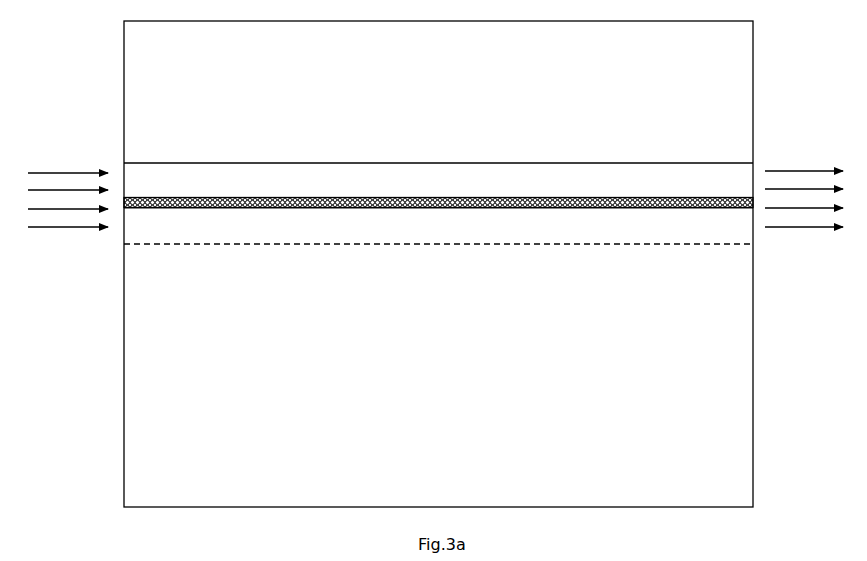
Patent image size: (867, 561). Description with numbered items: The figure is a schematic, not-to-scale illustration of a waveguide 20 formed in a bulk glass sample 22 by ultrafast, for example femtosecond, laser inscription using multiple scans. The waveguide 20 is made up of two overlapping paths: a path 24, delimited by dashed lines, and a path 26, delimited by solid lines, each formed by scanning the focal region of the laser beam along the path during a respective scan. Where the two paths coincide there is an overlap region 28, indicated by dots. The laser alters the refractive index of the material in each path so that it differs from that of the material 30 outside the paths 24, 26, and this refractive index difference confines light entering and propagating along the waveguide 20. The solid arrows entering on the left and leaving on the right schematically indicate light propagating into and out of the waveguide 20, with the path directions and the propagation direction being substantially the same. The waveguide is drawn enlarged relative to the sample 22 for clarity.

The waveguide 20 is at (718, 223).
The bulk glass sample 22 is at (753, 428).
The path 24 is at (652, 244).
The path 26 is at (677, 163).
The overlap region 28 is at (703, 198).
The material outside the paths 30 is at (616, 150).